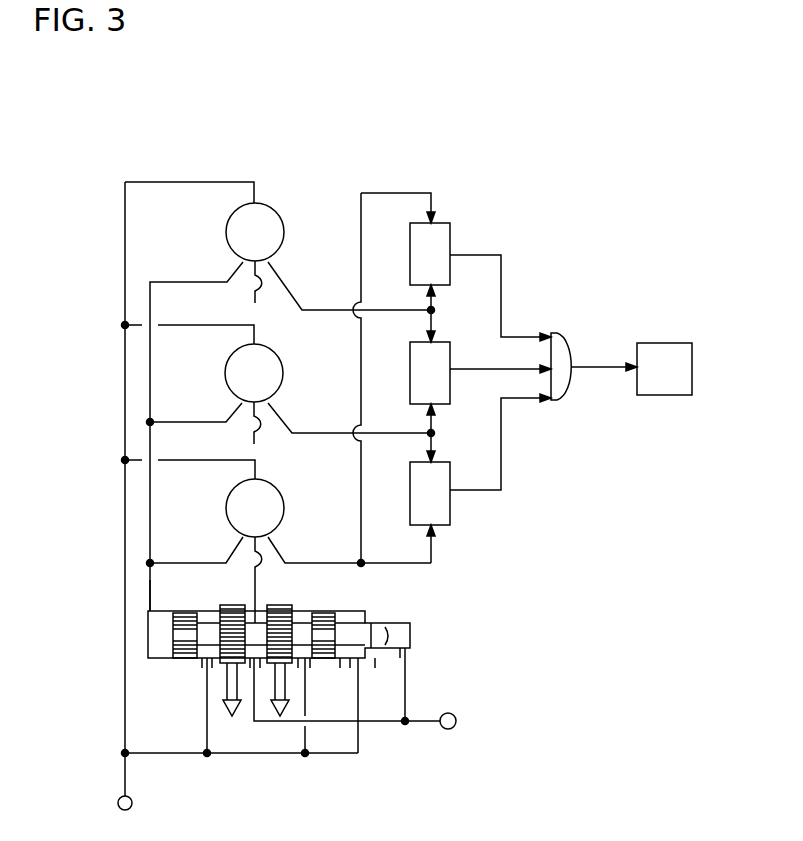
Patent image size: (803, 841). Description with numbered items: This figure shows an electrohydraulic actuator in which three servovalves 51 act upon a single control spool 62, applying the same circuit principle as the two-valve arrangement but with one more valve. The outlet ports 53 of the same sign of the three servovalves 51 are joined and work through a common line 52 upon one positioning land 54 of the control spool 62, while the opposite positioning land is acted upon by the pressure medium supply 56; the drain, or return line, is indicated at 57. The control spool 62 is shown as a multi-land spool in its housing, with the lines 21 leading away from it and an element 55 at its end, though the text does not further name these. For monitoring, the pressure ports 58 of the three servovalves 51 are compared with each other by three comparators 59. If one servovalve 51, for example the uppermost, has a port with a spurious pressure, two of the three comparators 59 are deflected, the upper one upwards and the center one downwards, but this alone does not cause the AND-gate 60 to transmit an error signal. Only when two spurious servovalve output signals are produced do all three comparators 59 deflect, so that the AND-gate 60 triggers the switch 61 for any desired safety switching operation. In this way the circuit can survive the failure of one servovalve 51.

The output lines 21 is at (277, 708).
The servovalve 51 is at (260, 226).
The common line 52 is at (150, 580).
The outlet port 53 is at (238, 265).
The positioning land 54 is at (236, 636).
The actuator 55 is at (366, 614).
The pressure medium supply 56 is at (132, 803).
The drain or return line 57 is at (455, 727).
The pressure port 58 is at (282, 272).
The comparator 59 is at (432, 250).
The AND-gate 60 is at (560, 358).
The switch 61 is at (663, 365).
The control spool 62 is at (377, 650).